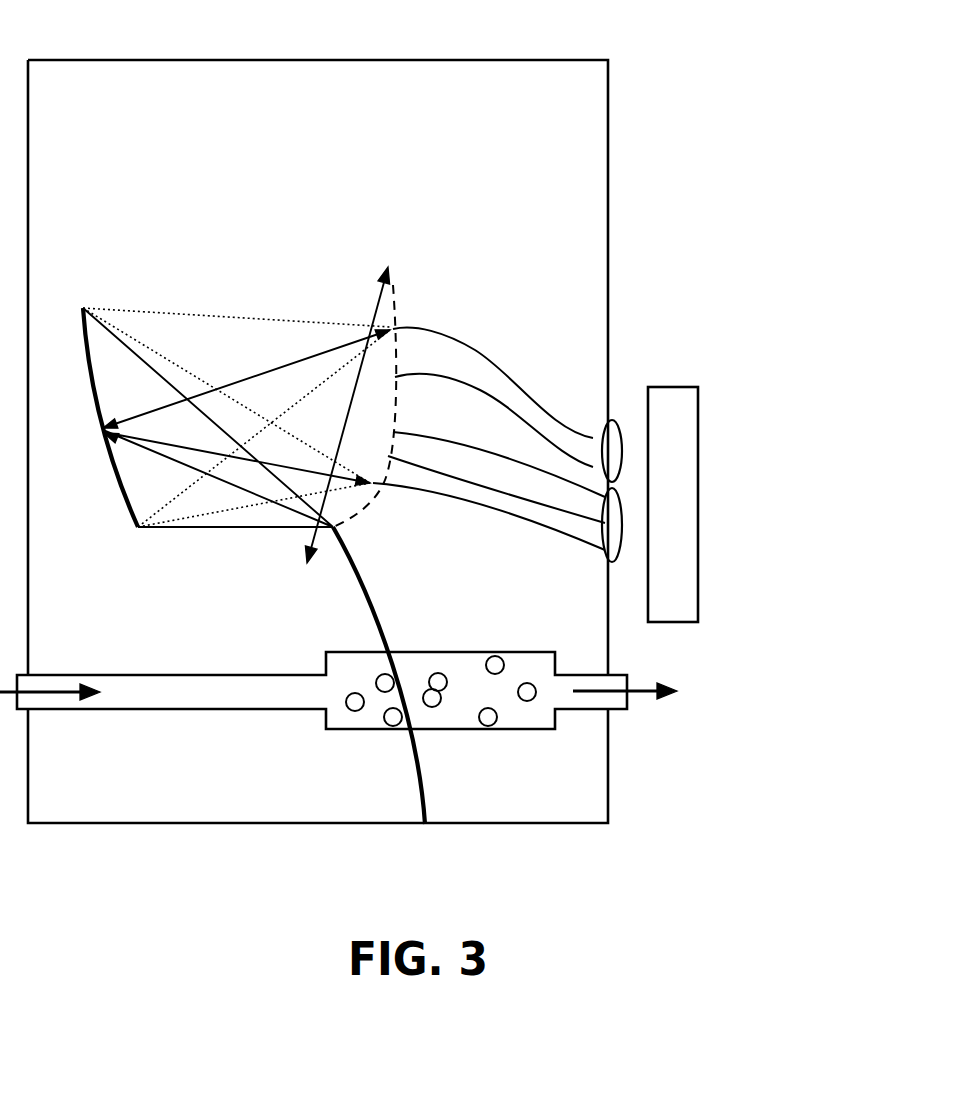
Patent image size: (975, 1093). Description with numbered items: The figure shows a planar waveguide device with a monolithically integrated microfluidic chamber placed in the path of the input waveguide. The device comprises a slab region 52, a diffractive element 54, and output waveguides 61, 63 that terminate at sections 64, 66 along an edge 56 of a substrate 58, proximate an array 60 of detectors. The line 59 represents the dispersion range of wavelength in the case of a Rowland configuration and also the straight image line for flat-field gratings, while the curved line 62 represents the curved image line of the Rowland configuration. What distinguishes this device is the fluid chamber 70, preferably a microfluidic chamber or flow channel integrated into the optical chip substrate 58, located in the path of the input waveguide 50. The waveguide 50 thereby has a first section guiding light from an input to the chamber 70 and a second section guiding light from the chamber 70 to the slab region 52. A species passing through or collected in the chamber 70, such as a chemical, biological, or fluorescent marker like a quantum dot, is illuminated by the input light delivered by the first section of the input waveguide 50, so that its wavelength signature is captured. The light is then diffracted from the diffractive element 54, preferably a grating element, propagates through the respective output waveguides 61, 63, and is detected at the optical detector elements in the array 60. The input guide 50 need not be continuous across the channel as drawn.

The input waveguide 50 is at (422, 778).
The slab region 52 is at (232, 553).
The diffractive element 54 is at (110, 473).
The edge 56 is at (609, 82).
The substrate 58 is at (360, 87).
The line 59 is at (380, 300).
The array of detectors 60 is at (699, 502).
The output waveguide 61 is at (493, 487).
The curved image line 62 is at (395, 300).
The output waveguide 63 is at (537, 357).
The section 64 is at (614, 560).
The section 66 is at (613, 420).
The fluid chamber 70 is at (337, 733).